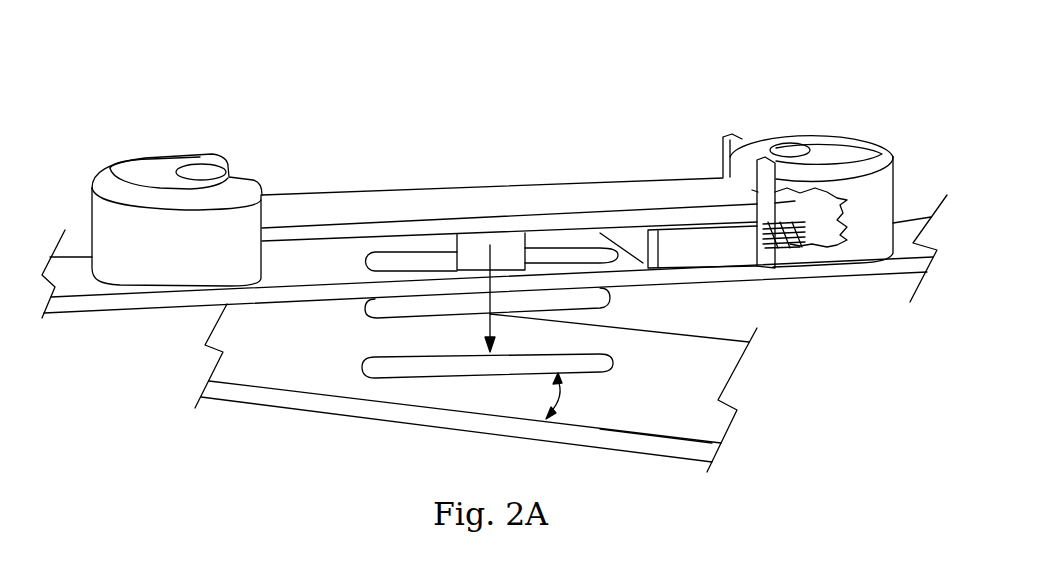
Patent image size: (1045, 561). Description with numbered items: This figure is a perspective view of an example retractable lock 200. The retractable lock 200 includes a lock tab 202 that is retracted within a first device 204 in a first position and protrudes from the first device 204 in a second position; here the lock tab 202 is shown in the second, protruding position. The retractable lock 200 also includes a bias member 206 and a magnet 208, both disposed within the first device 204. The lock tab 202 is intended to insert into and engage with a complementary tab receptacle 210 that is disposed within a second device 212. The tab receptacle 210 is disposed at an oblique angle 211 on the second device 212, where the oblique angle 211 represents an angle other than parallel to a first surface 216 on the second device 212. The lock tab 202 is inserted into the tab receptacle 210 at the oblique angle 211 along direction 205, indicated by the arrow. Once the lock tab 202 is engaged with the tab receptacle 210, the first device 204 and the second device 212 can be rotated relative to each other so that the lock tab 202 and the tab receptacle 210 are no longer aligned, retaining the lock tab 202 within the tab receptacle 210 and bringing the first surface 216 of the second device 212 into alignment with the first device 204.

The retractable lock 200 is at (237, 63).
The lock tab 202 is at (590, 303).
The first device 204 is at (107, 289).
The direction 205 is at (487, 322).
The bias member 206 is at (802, 248).
The magnet 208 is at (637, 238).
The tab receptacle 210 is at (423, 366).
The oblique angle 211 is at (562, 392).
The second device 212 is at (275, 375).
The first surface 216 is at (658, 446).